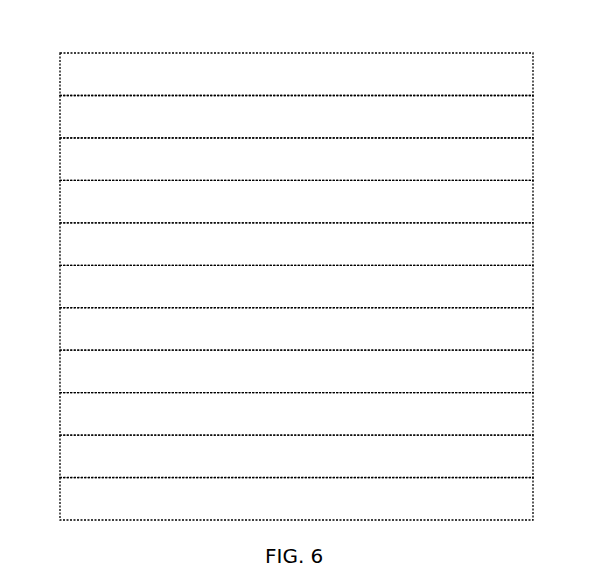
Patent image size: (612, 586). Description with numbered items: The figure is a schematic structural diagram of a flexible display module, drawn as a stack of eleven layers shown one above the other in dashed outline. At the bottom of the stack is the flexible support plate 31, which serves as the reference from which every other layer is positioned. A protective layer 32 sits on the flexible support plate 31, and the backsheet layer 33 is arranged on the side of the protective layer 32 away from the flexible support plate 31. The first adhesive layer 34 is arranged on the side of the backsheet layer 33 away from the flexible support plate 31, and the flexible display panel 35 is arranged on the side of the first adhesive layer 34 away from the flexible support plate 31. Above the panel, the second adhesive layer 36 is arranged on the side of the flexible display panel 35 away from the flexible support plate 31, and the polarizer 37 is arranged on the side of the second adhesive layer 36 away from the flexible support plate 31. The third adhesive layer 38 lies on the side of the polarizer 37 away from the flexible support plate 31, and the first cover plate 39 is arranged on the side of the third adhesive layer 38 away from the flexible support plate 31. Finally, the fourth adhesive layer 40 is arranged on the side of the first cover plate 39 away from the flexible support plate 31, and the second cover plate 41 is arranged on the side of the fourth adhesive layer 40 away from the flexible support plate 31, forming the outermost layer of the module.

The flexible support plate 31 is at (505, 510).
The protective layer 32 is at (90, 465).
The backsheet layer 33 is at (505, 426).
The first adhesive layer 34 is at (90, 380).
The flexible display panel 35 is at (505, 341).
The second adhesive layer 36 is at (90, 295).
The polarizer 37 is at (505, 256).
The third adhesive layer 38 is at (90, 210).
The first cover plate 39 is at (505, 171).
The fourth adhesive layer 40 is at (90, 126).
The second cover plate 41 is at (505, 86).